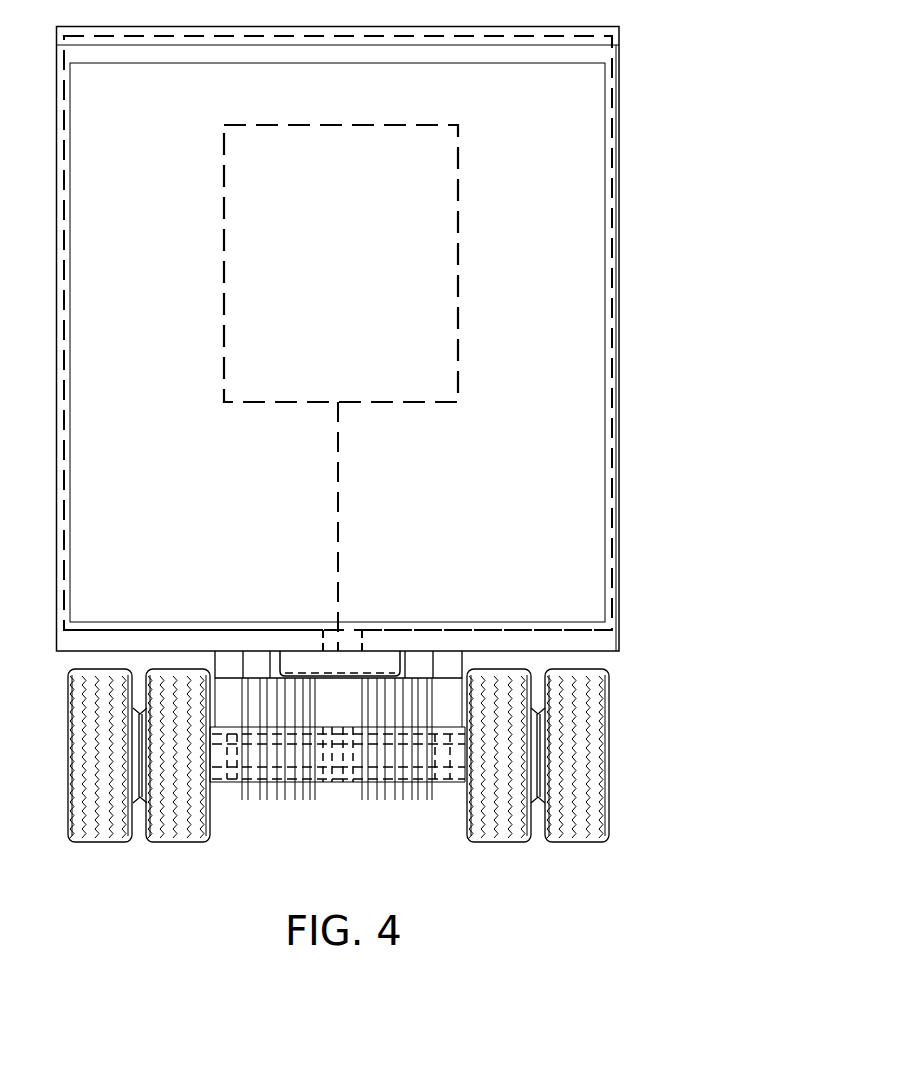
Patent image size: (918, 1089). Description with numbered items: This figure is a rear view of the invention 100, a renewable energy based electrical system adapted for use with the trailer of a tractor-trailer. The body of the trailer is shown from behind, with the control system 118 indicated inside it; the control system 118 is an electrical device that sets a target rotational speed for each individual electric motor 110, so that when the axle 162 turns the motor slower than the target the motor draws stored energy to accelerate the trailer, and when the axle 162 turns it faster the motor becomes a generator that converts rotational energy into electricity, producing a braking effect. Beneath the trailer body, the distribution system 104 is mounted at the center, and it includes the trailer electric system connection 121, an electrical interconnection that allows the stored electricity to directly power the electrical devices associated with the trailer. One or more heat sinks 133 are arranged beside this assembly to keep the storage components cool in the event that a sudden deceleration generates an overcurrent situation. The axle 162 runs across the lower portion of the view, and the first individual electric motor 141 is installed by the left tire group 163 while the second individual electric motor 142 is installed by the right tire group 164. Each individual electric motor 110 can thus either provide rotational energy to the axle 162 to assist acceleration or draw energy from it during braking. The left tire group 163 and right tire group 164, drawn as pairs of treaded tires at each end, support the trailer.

The invention 100 is at (648, 702).
The distribution system 104 is at (348, 665).
The individual electric motor 110 is at (302, 755).
The control system 118 is at (435, 175).
The trailer electric system connection 121 is at (300, 667).
The heat sinks 133 is at (260, 690).
The first individual electric motor 141 is at (260, 755).
The second individual electric motor 142 is at (400, 750).
The axle 162 is at (227, 800).
The left tire group 163 is at (103, 830).
The right tire group 164 is at (573, 835).